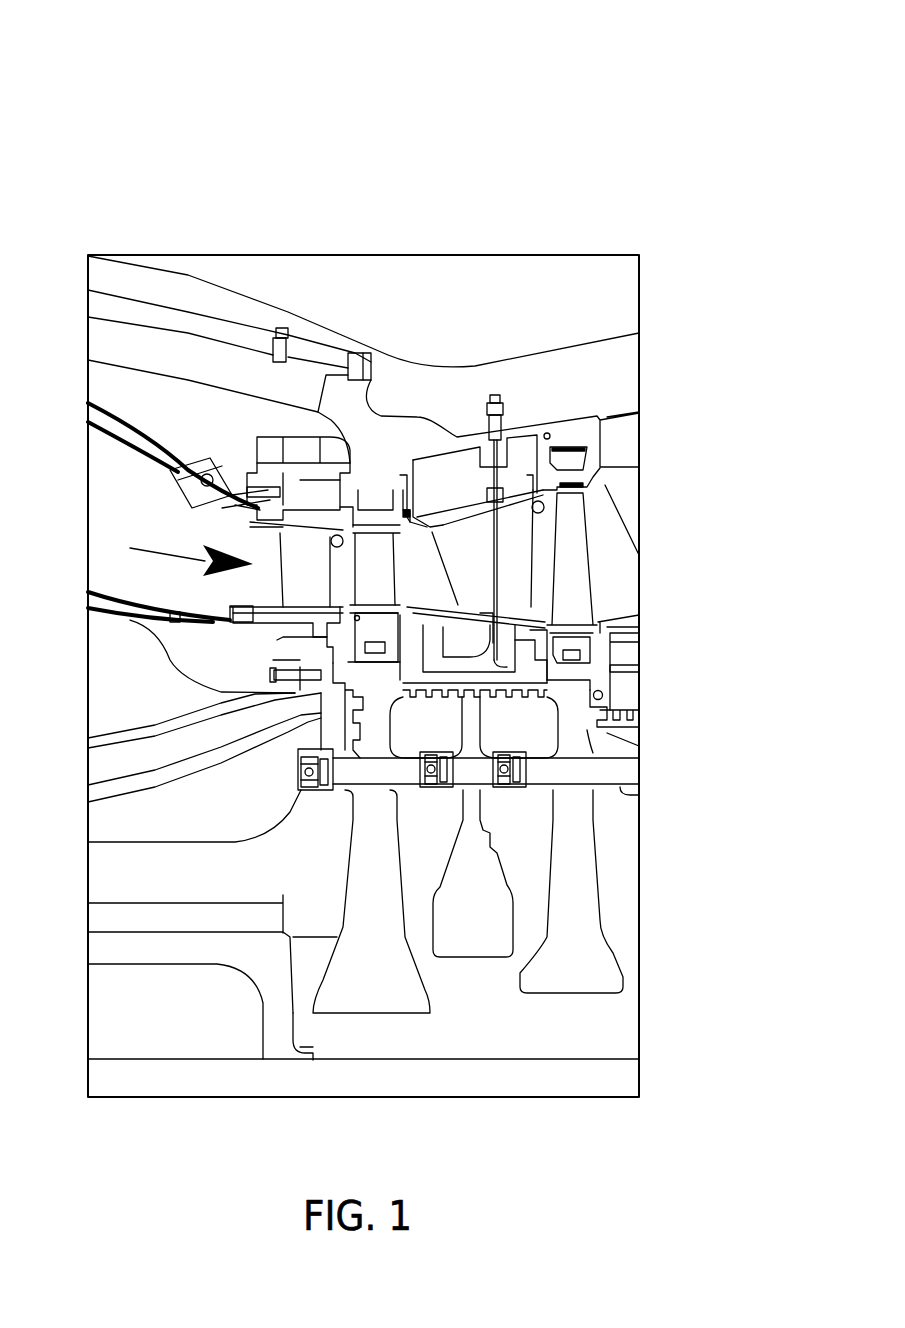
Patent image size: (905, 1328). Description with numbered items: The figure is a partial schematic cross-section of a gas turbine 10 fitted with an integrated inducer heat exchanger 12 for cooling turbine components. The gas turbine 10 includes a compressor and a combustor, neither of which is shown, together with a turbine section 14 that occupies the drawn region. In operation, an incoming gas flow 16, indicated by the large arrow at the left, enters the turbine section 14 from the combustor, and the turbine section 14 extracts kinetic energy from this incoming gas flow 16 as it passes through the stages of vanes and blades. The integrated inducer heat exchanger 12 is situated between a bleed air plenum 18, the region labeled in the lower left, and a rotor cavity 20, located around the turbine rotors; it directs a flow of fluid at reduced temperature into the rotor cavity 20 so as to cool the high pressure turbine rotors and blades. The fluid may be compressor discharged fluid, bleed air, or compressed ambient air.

The gas turbine 10 is at (675, 65).
The integrated inducer heat exchanger 12 is at (298, 768).
The turbine section 14 is at (299, 1065).
The incoming gas flow 16 is at (132, 548).
The bleed air plenum 18 is at (196, 833).
The rotor cavity 20 is at (382, 812).